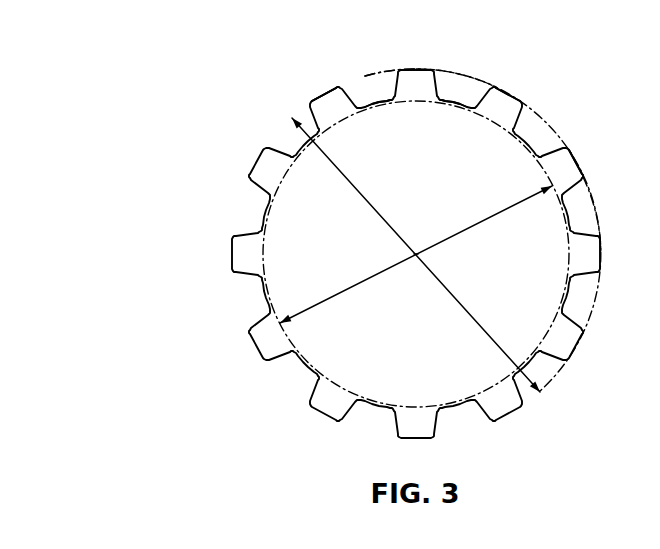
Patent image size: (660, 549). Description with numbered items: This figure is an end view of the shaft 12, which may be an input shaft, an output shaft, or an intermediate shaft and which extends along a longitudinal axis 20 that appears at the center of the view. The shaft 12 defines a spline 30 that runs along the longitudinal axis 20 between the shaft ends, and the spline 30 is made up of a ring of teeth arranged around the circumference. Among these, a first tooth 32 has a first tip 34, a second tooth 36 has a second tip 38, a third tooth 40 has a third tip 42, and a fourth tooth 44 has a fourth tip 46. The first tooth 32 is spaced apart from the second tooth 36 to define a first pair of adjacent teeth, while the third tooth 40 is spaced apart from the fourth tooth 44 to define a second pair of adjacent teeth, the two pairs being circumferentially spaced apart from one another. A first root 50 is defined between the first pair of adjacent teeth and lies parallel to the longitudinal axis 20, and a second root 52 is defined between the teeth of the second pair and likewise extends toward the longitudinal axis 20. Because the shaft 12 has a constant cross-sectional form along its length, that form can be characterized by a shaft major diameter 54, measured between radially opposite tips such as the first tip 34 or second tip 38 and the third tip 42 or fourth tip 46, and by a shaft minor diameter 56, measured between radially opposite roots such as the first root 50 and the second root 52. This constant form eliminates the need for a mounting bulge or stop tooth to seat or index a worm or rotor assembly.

The shaft 12 is at (153, 265).
The longitudinal axis 20 is at (417, 266).
The spline 30 is at (234, 57).
The first tooth 32 is at (308, 110).
The first tip 34 is at (317, 95).
The second tooth 36 is at (390, 77).
The second tip 38 is at (422, 68).
The third tooth 40 is at (492, 76).
The third tip 42 is at (514, 91).
The fourth tooth 44 is at (589, 182).
The fourth tip 46 is at (574, 162).
The first root 50 is at (381, 104).
The second root 52 is at (457, 107).
The shaft major diameter 54 is at (363, 195).
The shaft minor diameter 56 is at (302, 322).